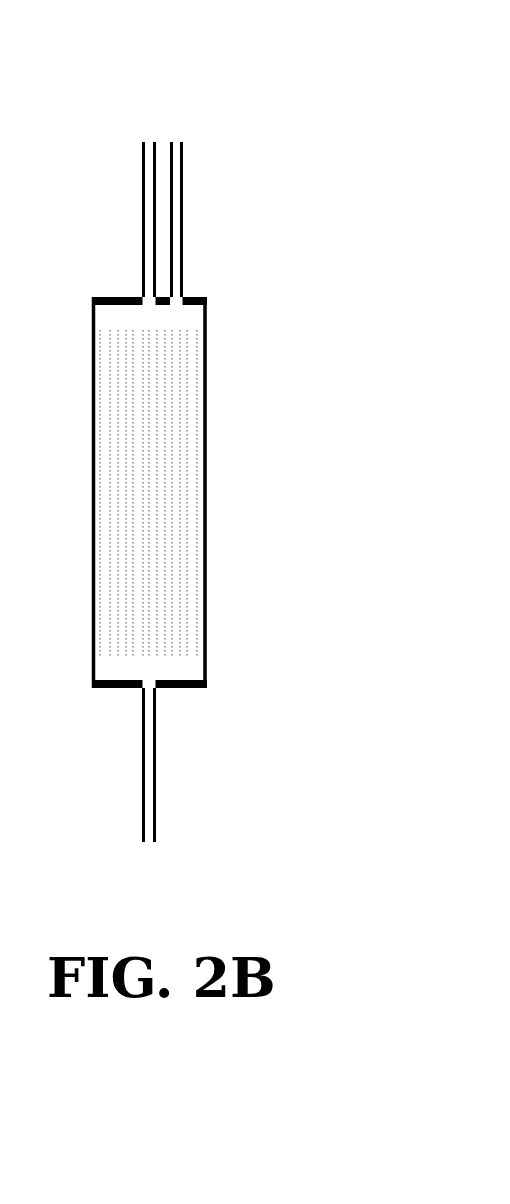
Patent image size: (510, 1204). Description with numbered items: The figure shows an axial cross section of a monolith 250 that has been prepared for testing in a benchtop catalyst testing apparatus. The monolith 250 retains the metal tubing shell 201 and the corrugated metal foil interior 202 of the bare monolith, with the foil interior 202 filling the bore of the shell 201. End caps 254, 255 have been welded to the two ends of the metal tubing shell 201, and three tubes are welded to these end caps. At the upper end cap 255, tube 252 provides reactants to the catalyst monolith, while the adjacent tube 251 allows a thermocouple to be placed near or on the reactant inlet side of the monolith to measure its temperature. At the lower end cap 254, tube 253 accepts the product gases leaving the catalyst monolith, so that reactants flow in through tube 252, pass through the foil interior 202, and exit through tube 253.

The monolith prepared for testing 250 is at (150, 910).
The metal tubing shell 201 is at (209, 445).
The corrugated metal foil interior 202 is at (156, 560).
The tube 251 is at (139, 141).
The tube 252 is at (187, 144).
The tube 253 is at (158, 789).
The end cap 254 is at (190, 690).
The end cap 255 is at (118, 294).